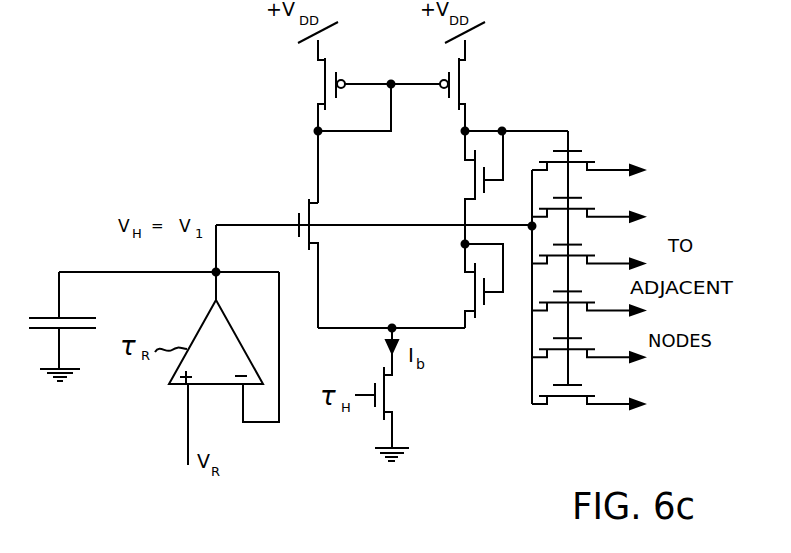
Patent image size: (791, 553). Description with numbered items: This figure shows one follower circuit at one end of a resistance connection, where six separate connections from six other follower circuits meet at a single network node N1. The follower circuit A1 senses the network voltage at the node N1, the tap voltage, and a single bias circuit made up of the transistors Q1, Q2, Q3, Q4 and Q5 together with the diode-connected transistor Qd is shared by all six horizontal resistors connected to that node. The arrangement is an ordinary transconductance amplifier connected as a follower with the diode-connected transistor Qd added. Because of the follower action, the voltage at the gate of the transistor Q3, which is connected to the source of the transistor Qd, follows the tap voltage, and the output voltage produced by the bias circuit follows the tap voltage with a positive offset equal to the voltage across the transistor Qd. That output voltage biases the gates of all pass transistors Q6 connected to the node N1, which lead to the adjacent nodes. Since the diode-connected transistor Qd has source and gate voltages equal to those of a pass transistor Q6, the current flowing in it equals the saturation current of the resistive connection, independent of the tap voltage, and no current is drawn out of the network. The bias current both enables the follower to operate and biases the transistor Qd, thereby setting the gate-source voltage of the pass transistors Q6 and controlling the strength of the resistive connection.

The bias circuit transistor Q1 is at (385, 407).
The bias circuit transistor Q2 is at (324, 229).
The transistor Q3 is at (471, 285).
The bias circuit transistor Q4 is at (316, 85).
The bias circuit transistor Q5 is at (465, 85).
The pass transistor Q6 is at (588, 271).
The diode-connected transistor Qd is at (472, 187).
The follower circuit A1 is at (224, 368).
The node N1 is at (530, 226).